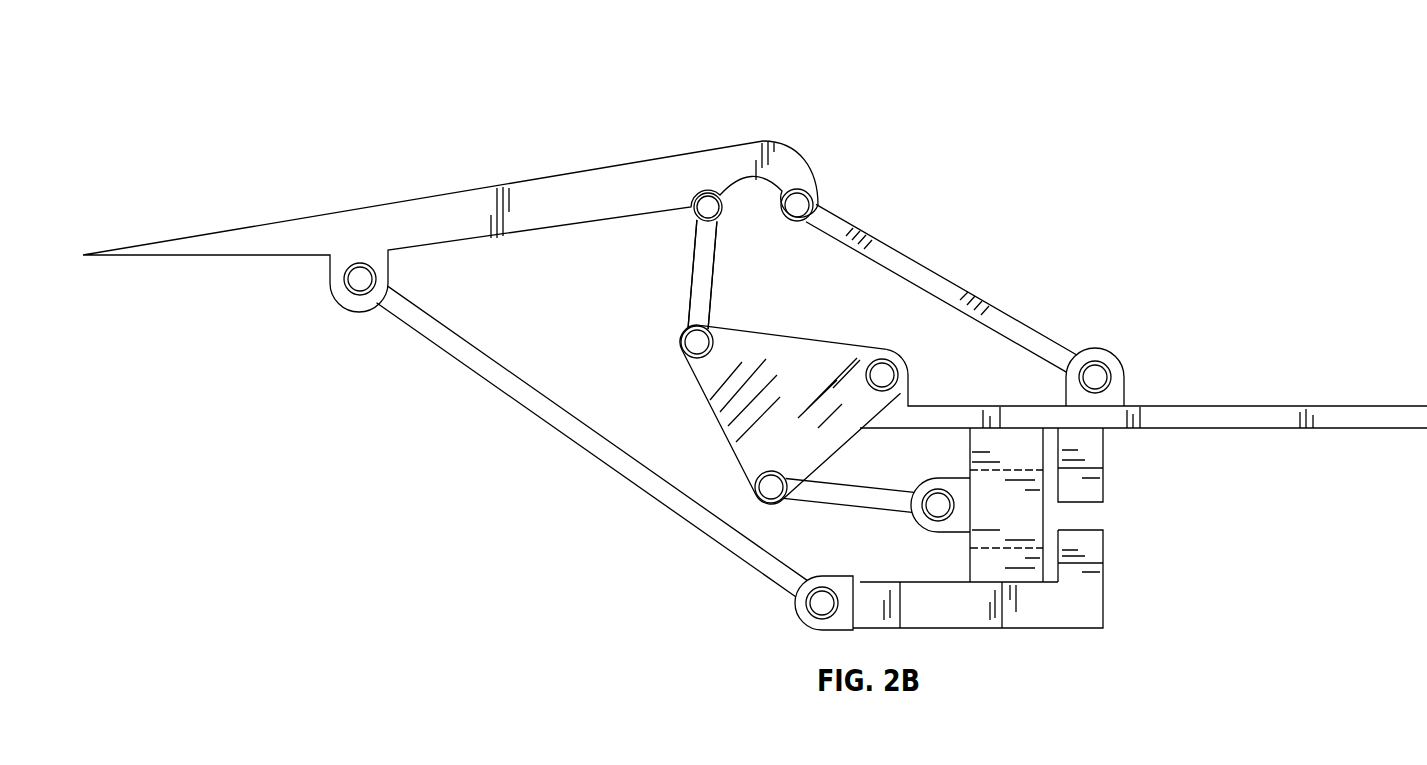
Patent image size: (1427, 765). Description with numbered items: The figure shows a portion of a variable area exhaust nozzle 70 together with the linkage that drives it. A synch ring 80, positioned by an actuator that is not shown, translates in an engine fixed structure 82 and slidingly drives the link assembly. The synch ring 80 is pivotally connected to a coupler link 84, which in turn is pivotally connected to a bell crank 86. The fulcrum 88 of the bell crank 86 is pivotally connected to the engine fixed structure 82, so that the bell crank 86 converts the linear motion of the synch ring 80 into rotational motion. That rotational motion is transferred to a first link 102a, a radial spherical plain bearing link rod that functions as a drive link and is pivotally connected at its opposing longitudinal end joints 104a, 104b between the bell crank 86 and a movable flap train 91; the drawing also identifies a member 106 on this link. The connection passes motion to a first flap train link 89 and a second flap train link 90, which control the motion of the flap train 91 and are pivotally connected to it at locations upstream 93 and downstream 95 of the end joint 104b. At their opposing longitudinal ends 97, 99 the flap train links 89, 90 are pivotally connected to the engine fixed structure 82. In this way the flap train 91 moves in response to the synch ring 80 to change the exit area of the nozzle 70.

The variable area exhaust nozzle 70 is at (1322, 64).
The synch ring 80 is at (980, 434).
The engine fixed structure 82 is at (1105, 578).
The coupler link 84 is at (848, 508).
The bell crank 86 is at (712, 409).
The fulcrum 88 is at (925, 375).
The first flap train link 89 is at (582, 449).
The second flap train link 90 is at (913, 287).
The movable flap train 91 is at (573, 172).
The upstream location 93 is at (818, 197).
The downstream location 95 is at (350, 309).
The longitudinal end 97 is at (1110, 348).
The longitudinal end 99 is at (793, 616).
The first link 102a is at (714, 290).
The end joint 104a is at (681, 338).
The end joint 104b is at (690, 208).
The link member 106 is at (710, 228).